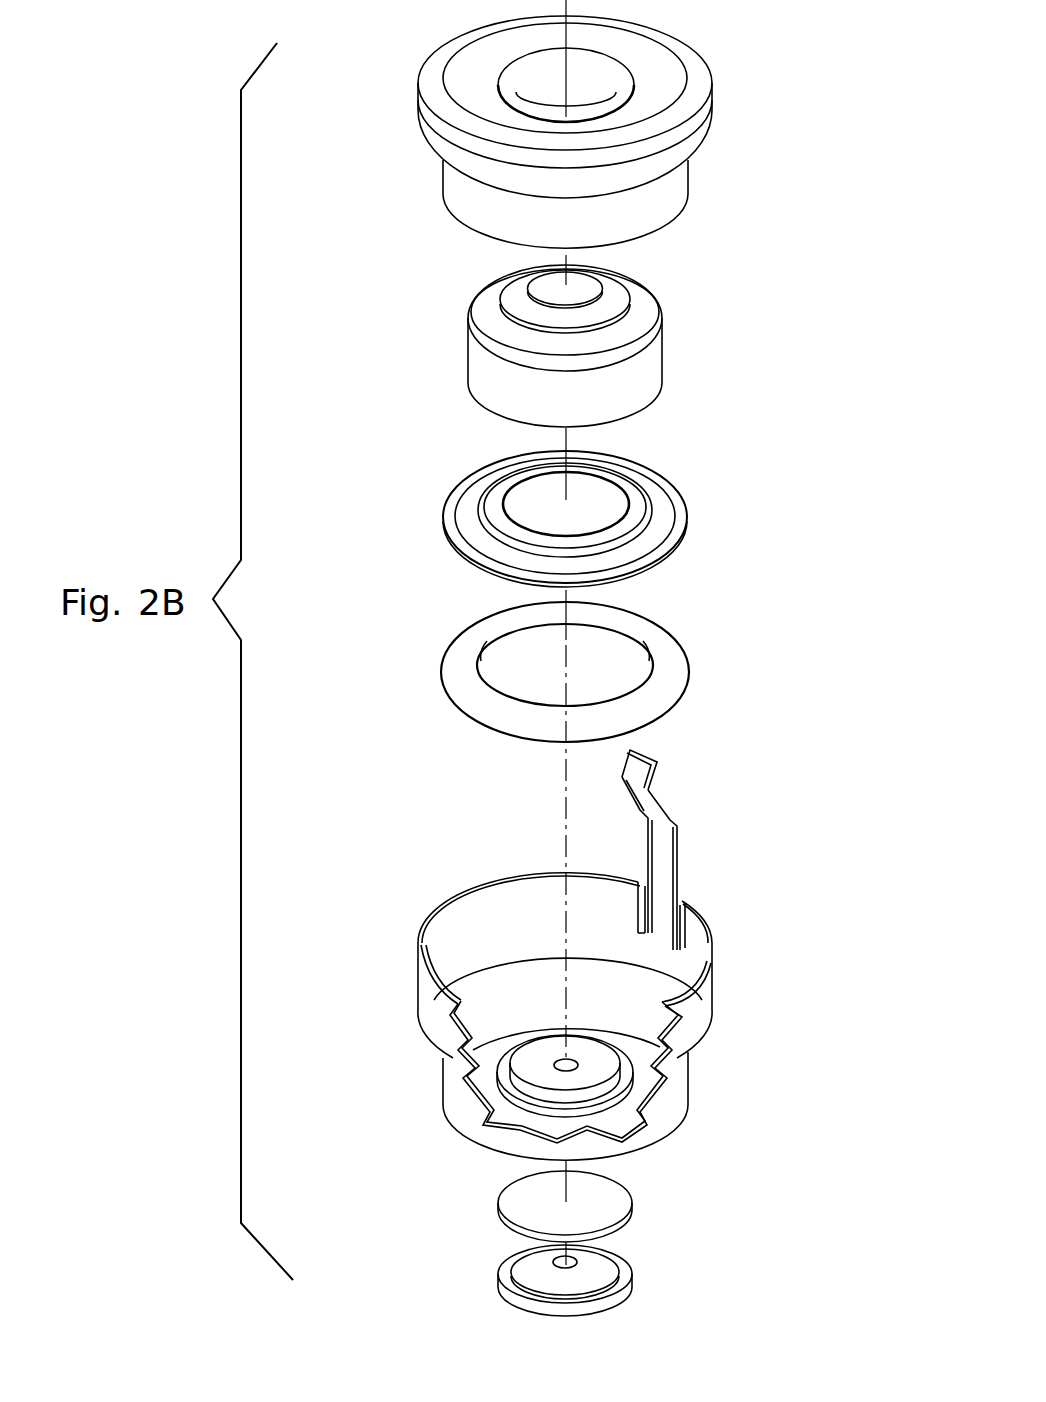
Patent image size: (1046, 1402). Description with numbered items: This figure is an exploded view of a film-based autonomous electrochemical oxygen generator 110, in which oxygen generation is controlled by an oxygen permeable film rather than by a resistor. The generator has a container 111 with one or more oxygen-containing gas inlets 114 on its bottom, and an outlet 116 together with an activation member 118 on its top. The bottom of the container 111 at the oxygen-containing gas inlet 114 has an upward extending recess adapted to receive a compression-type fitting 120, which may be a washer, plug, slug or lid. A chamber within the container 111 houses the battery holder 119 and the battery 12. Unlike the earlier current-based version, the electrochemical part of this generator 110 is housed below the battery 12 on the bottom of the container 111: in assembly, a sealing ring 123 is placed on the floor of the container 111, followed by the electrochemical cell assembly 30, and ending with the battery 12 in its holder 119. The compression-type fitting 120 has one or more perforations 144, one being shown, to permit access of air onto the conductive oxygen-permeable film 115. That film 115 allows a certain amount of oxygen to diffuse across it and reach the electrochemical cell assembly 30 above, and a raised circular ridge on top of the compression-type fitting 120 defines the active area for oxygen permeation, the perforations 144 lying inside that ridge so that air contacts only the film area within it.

The electrochemical gas generator 110 is at (388, 264).
The outlet 116 is at (527, 82).
The battery holder 119 is at (670, 186).
The battery 12 is at (640, 374).
The electrochemical cell assembly 30 is at (672, 518).
The sealing ring 123 is at (668, 660).
The activation member 118 is at (663, 857).
The container 111 is at (697, 1010).
The oxygen-containing gas inlet 114 is at (563, 1057).
The conductive oxygen-permeable film 115 is at (620, 1208).
The compression-type fitting 120 is at (620, 1270).
The perforation 144 is at (556, 1260).